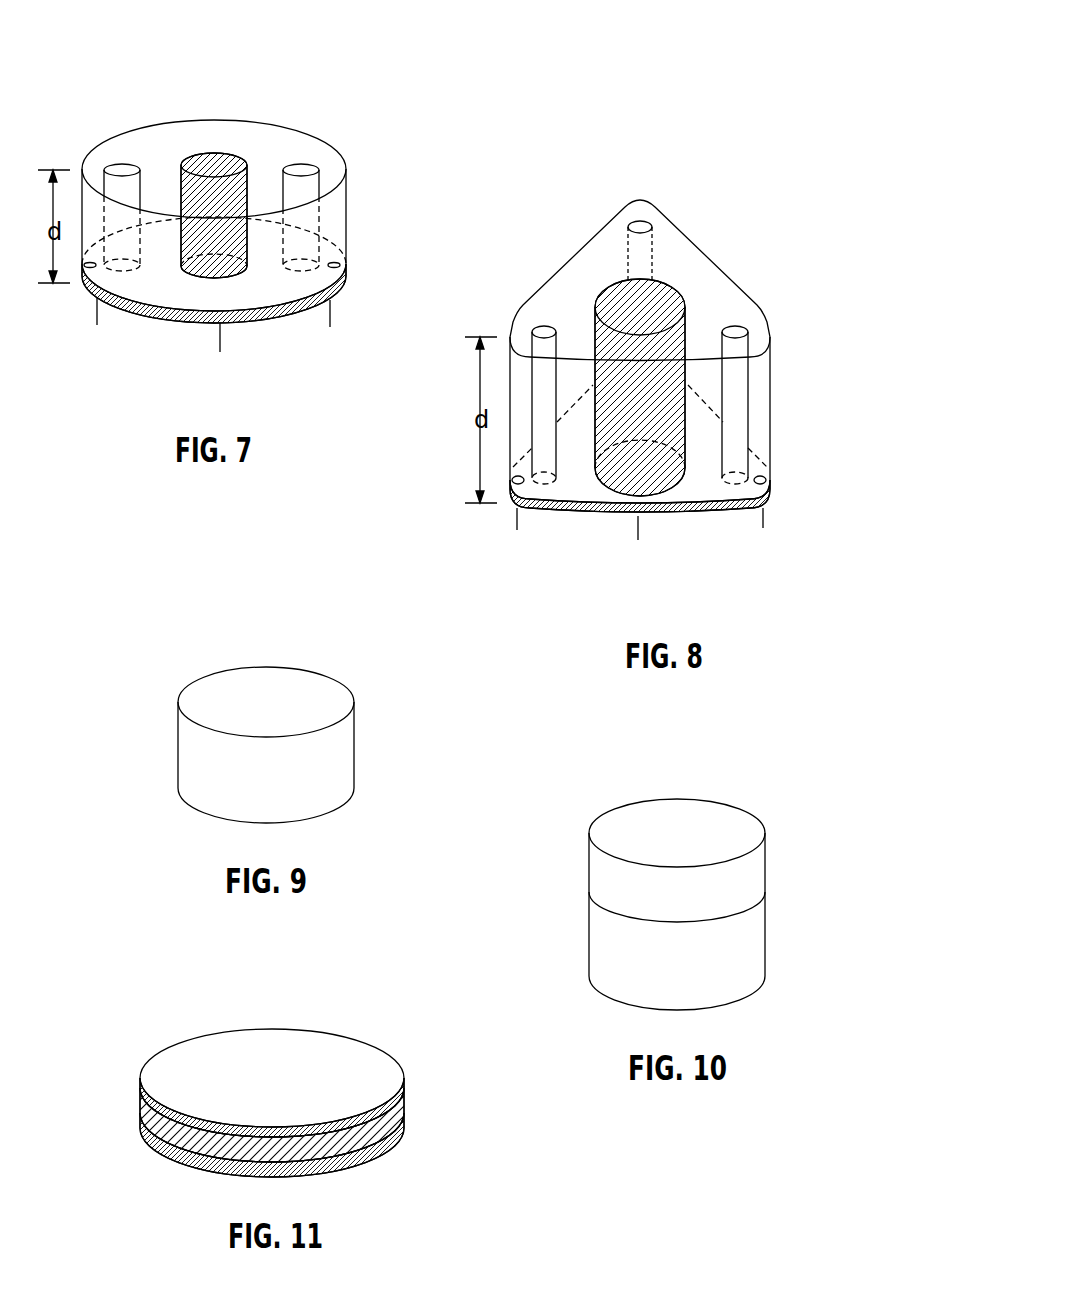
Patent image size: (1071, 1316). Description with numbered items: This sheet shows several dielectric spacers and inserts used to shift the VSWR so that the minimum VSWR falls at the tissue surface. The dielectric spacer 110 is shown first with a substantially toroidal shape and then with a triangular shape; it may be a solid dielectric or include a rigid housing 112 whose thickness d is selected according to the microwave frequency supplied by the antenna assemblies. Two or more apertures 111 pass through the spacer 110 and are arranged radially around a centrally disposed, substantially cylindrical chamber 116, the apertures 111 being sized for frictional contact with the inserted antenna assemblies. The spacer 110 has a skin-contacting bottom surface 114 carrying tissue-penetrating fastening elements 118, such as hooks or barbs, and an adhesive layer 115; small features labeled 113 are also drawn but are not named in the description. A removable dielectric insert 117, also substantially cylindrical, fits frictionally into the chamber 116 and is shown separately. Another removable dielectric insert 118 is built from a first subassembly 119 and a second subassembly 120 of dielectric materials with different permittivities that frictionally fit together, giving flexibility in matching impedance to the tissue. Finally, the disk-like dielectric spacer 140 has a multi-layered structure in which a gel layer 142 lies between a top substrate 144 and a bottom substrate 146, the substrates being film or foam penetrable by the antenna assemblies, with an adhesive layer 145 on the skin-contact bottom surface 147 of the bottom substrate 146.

In FIG. 7, the dielectric spacer 110 is at (340, 58).
In FIG. 8, the dielectric spacer 110 is at (741, 191).
In FIG. 7, the apertures 111 is at (117, 173).
In FIG. 8, the apertures 111 is at (545, 330).
In FIG. 7, the rigid housing 112 is at (265, 120).
In FIG. 8, the rigid housing 112 is at (640, 340).
In FIG. 7, the holes 113 is at (338, 265).
In FIG. 8, the holes 113 is at (768, 478).
In FIG. 7, the bottom surface 114 is at (343, 268).
In FIG. 8, the bottom surface 114 is at (768, 482).
In FIG. 7, the adhesive layer 115 is at (337, 287).
In FIG. 8, the adhesive layer 115 is at (683, 514).
In FIG. 7, the chamber 116 is at (190, 242).
In FIG. 8, the chamber 116 is at (603, 468).
In FIG. 7, the removable dielectric insert 117 is at (210, 157).
In FIG. 8, the removable dielectric insert 117 is at (663, 278).
In FIG. 9, the removable dielectric insert 117 is at (225, 662).
In FIG. 7, the fastening elements 118 is at (97, 325).
In FIG. 8, the fastening elements 118 is at (517, 530).
In FIG. 10, the fastening elements 118 is at (635, 785).
In FIG. 10, the first subassembly 119 is at (767, 873).
In FIG. 10, the second subassembly 120 is at (767, 952).
In FIG. 11, the dielectric spacer 140 is at (170, 1033).
In FIG. 11, the gel layer 142 is at (403, 1097).
In FIG. 11, the top substrate 144 is at (268, 1038).
In FIG. 11, the adhesive layer 145 is at (400, 1143).
In FIG. 11, the bottom substrate 146 is at (405, 1118).
In FIG. 11, the bottom surface 147 is at (142, 1107).